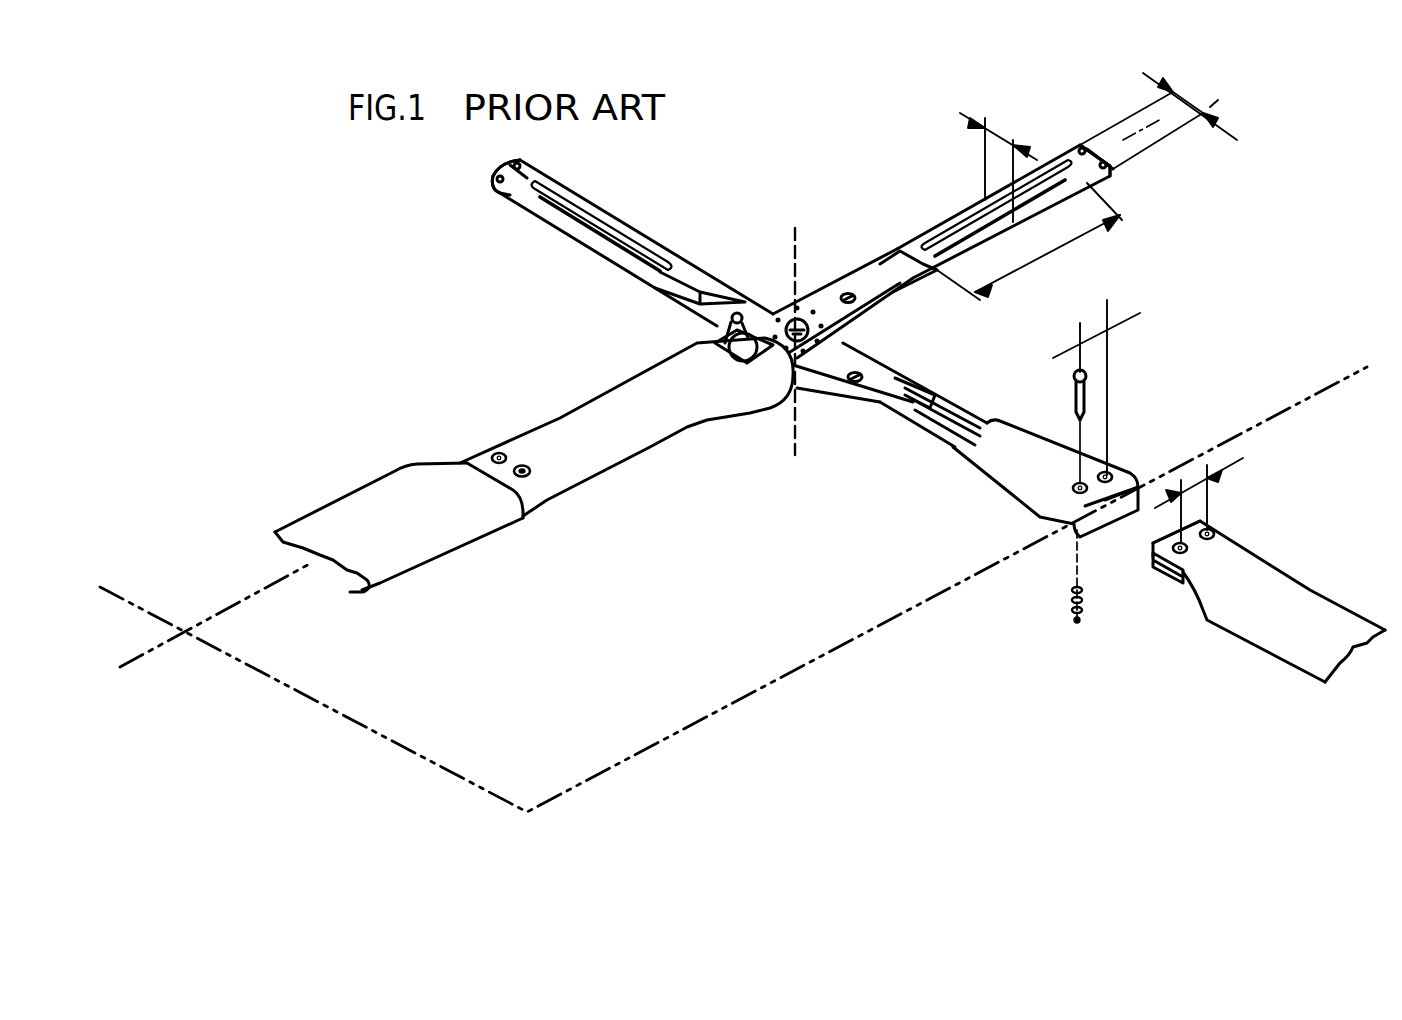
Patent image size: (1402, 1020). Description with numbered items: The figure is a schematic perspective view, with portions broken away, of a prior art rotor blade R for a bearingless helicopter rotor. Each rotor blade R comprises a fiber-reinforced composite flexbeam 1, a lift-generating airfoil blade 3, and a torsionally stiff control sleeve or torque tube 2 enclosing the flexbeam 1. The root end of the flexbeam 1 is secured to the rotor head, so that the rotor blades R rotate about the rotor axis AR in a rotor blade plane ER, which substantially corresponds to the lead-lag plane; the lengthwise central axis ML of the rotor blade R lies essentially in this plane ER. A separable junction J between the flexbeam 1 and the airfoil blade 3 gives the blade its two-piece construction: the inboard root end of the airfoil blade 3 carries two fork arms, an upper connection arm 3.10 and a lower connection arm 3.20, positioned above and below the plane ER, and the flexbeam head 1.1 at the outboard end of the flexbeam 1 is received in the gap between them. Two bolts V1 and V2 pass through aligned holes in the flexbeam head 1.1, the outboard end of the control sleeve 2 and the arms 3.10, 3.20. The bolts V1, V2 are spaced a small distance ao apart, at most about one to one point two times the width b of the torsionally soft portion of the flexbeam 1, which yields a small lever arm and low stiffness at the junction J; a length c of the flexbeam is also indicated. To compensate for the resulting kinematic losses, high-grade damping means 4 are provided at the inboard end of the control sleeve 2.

The flexbeam 1 is at (679, 268).
The flexbeam head 1.1 is at (497, 193).
The control sleeve or torque tube 2 is at (638, 435).
The airfoil blade 3 is at (413, 550).
The upper connection arm 3.10 is at (1150, 560).
The lower connection arm 3.20 is at (1172, 582).
The damping means 4 is at (748, 348).
The bolt V1 is at (1076, 398).
The bolt V2 is at (522, 465).
The junction J is at (548, 500).
The lengthwise central axis ML is at (237, 604).
The rotor blade plane ER is at (357, 703).
The rotor axis AR is at (797, 240).
The rotor blade R is at (362, 342).
The bolt spacing distance ao is at (1153, 298).
The width of the flexbeam b is at (998, 150).
The flexbeam length c is at (1029, 241).